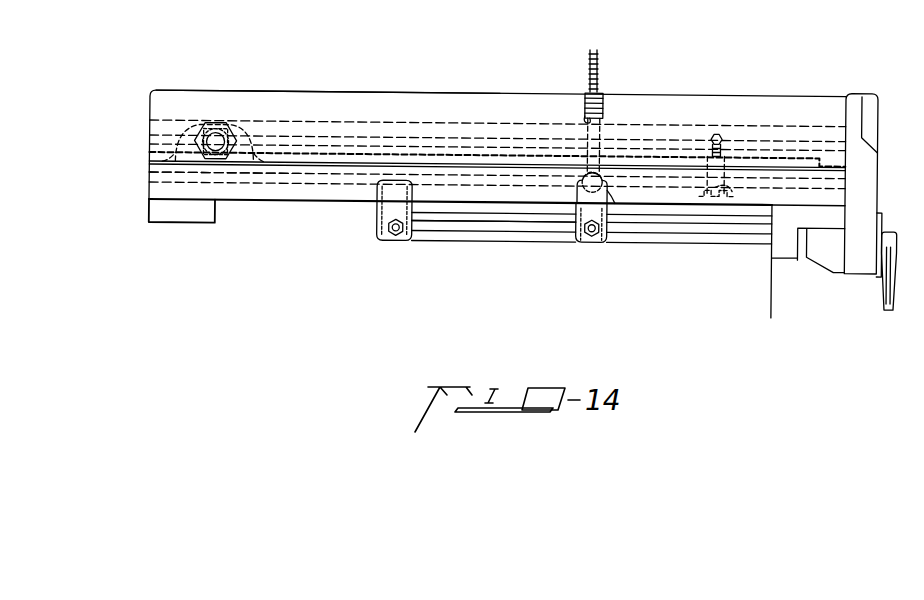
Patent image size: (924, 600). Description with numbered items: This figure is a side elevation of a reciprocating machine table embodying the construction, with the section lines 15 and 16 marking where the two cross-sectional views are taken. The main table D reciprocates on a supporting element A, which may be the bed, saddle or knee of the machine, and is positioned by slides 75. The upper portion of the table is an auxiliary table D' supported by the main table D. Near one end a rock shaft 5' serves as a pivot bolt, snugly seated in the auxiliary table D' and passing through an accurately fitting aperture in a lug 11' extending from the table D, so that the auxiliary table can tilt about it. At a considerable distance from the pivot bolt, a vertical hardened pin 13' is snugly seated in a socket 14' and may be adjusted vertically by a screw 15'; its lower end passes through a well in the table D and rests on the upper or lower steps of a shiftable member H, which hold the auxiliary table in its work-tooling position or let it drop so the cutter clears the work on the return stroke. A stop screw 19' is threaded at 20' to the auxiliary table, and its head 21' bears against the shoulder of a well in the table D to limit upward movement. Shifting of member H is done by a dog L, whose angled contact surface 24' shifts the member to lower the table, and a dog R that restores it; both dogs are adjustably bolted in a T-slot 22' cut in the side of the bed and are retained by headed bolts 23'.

The section line 15— 15 is at (216, 190).
The rock shaft 5' is at (213, 128).
The lug 11' is at (241, 123).
The auxiliary table D' is at (328, 72).
The main table D is at (180, 189).
The slides 75 is at (182, 211).
The supporting element A is at (225, 272).
The section line 16— 16 is at (593, 43).
The screw 15' is at (582, 71).
The socket 14' is at (563, 111).
The hardened pin 13' is at (621, 132).
The threaded portion 20' is at (736, 160).
The screw head 21' is at (702, 196).
The stop screw 19' is at (744, 196).
The contact surface 24' is at (423, 209).
The dog L is at (385, 205).
The T-slot 22' is at (494, 246).
The dog R is at (585, 208).
The headed bolt 23' is at (616, 248).
The shiftable member H is at (607, 178).